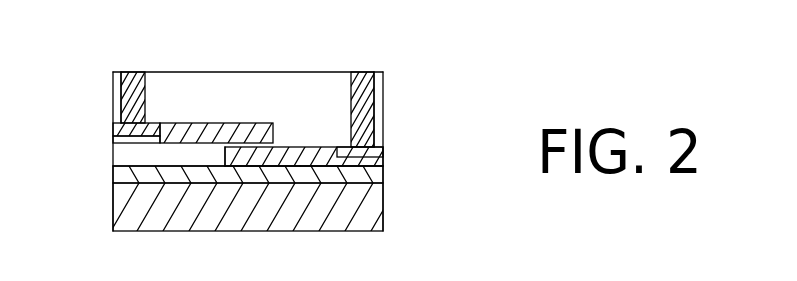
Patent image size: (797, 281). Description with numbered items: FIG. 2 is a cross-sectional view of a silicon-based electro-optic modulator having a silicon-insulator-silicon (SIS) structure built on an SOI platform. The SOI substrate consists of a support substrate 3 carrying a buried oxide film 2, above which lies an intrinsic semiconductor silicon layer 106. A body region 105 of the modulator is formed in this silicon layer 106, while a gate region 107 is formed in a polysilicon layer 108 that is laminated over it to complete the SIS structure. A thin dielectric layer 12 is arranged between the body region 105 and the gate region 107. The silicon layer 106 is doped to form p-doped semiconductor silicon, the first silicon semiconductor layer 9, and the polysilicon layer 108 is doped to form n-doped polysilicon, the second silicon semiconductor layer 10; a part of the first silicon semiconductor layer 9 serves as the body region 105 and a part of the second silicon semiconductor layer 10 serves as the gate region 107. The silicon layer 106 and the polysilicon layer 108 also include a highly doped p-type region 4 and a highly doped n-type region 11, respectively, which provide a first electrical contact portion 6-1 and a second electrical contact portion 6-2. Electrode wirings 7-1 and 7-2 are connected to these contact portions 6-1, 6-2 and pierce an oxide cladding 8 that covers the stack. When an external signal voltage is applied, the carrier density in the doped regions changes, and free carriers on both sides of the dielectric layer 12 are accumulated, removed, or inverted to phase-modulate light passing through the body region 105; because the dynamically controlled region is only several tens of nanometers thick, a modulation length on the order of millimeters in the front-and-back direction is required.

The buried oxide film 2 is at (375, 174).
The support substrate 3 is at (245, 213).
The p-type region 4 is at (374, 152).
The first electrical contact portion 6-1 is at (373, 127).
The second electrical contact portion 6-2 is at (126, 120).
The electrode wiring 7-1 is at (360, 84).
The electrode wiring 7-2 is at (130, 84).
The oxide cladding 8 is at (168, 78).
The first silicon semiconductor layer 9 is at (317, 162).
The second silicon semiconductor layer 10 is at (116, 178).
The n-type region 11 is at (118, 138).
The dielectric layer 12 is at (233, 168).
The body region 105 is at (262, 162).
The intrinsic semiconductor silicon layer 106 is at (410, 158).
The gate region 107 is at (243, 128).
The polysilicon layer 108 is at (96, 140).